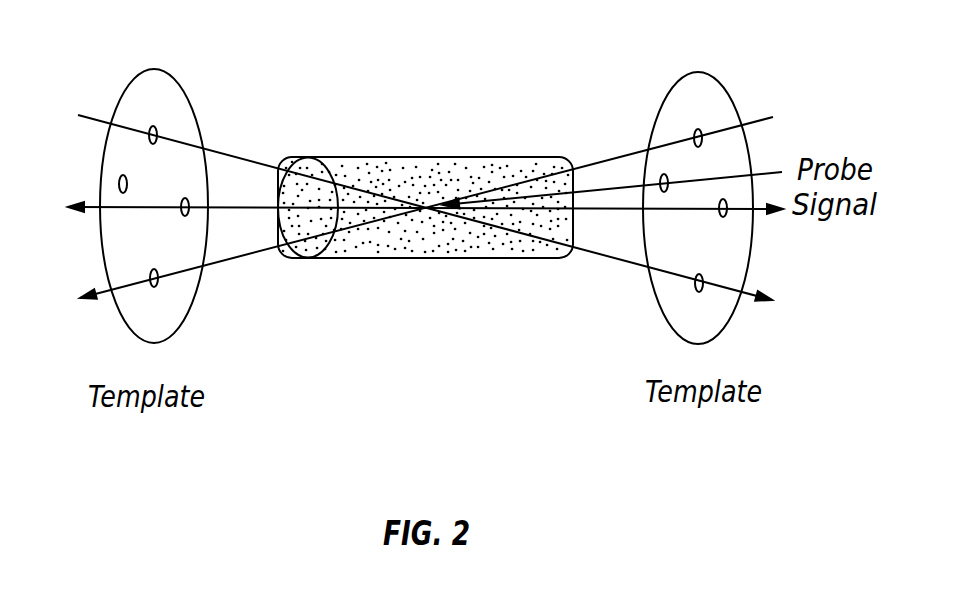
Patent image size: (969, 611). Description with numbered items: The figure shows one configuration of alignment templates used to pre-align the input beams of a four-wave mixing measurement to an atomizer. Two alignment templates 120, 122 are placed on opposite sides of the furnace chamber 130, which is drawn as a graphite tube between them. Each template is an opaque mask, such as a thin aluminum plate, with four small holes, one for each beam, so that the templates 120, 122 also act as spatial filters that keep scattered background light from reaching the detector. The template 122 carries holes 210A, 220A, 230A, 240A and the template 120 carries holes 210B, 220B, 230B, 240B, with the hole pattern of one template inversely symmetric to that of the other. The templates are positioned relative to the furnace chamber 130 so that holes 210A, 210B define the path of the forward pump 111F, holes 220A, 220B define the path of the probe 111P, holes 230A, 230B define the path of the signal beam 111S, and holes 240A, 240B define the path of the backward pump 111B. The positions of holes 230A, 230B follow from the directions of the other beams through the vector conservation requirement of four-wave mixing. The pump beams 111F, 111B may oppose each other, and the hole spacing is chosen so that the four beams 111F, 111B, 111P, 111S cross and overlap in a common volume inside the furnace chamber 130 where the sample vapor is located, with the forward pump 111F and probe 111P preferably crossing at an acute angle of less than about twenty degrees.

The alignment template 120 is at (145, 185).
The alignment template 122 is at (689, 186).
The furnace chamber 130 is at (445, 240).
The backward pump 111B is at (425, 196).
The forward pump 111F is at (469, 182).
The probe 111P is at (645, 165).
The signal beam 111S is at (459, 229).
The hole 210A is at (646, 112).
The hole 220A is at (613, 155).
The hole 230A is at (776, 248).
The hole 240A is at (651, 321).
The hole 210B is at (101, 311).
The hole 220B is at (103, 243).
The hole 230B is at (72, 157).
The hole 240B is at (97, 102).